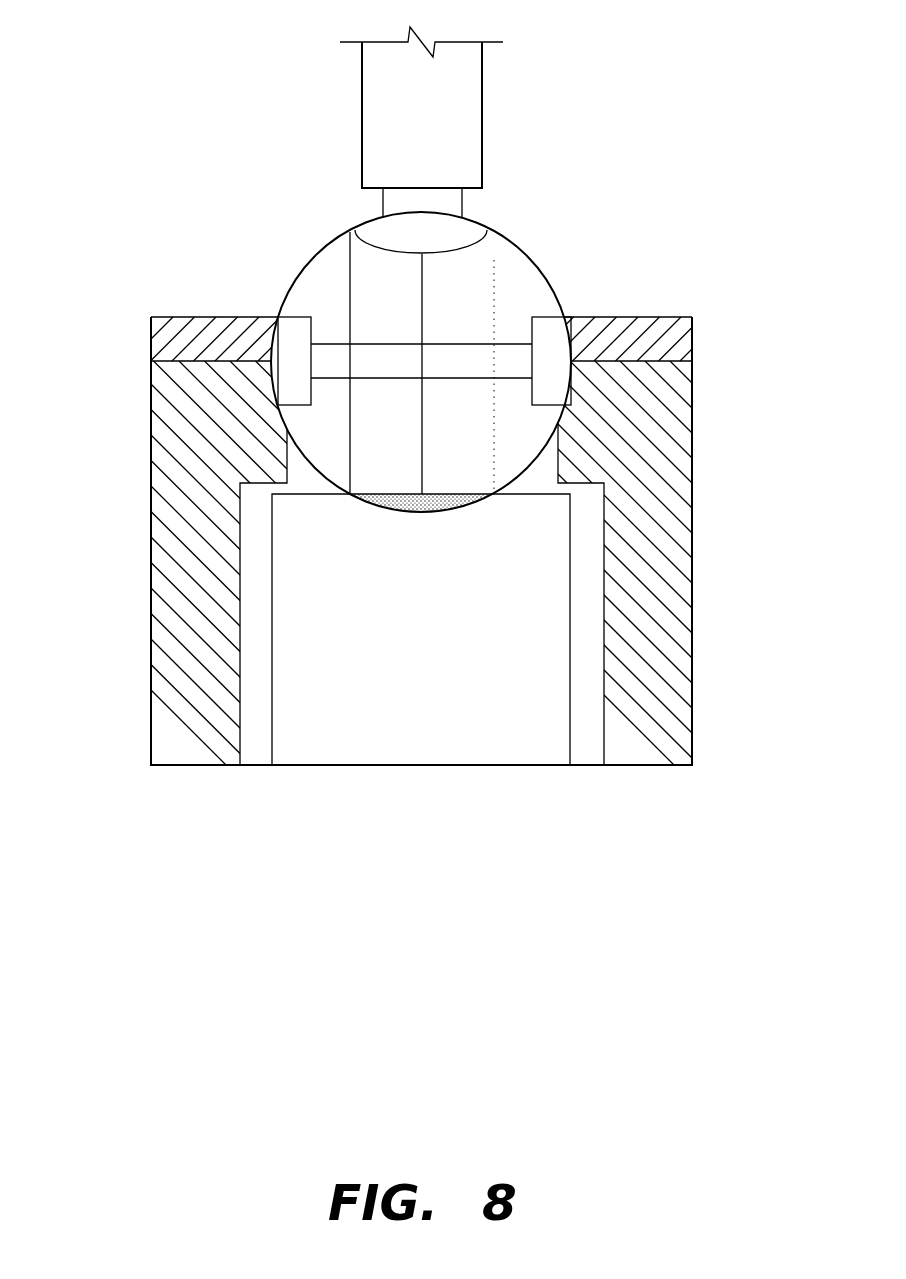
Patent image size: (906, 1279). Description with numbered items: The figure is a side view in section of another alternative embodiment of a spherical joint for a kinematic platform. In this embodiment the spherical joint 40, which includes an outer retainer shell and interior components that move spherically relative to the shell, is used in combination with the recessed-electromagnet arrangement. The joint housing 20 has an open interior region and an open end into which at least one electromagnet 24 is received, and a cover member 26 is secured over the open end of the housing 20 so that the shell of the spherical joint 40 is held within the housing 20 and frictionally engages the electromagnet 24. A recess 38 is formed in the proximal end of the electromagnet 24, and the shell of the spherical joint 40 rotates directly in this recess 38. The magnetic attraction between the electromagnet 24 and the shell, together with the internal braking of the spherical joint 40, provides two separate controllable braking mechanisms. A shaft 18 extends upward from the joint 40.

The shaft 18 is at (482, 145).
The joint housing 20 is at (150, 445).
The electromagnet 24 is at (557, 694).
The cover member 26 is at (645, 316).
The recess 38 is at (490, 522).
The spherical joint 40 is at (343, 232).